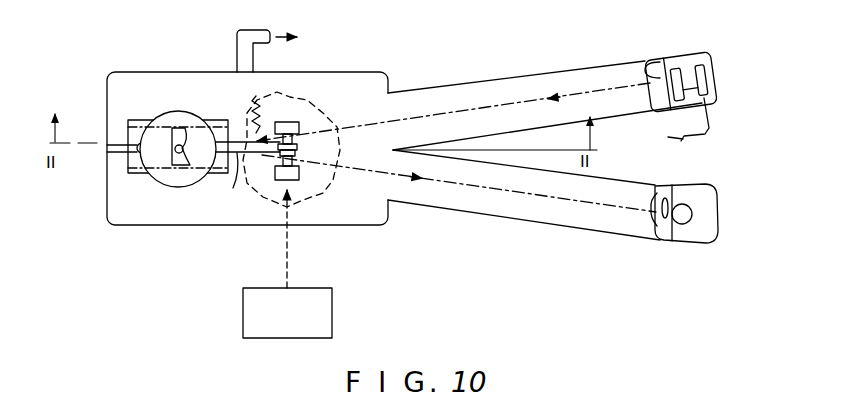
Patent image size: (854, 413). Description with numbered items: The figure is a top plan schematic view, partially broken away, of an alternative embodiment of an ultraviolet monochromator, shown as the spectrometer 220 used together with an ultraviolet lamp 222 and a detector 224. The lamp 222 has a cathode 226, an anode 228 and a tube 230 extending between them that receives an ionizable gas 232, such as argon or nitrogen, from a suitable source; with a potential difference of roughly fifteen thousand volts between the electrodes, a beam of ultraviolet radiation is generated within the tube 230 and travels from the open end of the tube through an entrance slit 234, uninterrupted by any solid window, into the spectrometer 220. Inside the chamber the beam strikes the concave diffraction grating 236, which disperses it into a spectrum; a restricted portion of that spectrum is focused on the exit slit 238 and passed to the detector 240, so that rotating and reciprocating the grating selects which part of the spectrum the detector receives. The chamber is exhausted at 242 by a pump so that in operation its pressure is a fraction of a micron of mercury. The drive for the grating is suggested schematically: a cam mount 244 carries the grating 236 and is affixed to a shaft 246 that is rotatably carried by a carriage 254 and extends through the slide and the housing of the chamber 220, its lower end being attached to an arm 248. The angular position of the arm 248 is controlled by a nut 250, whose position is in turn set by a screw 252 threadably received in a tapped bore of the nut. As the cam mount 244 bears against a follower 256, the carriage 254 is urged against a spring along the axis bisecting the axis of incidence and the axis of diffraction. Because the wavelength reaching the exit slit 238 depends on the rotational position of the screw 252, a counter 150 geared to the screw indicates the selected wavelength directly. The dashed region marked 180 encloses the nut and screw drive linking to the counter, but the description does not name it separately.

The counter 150 is at (243, 309).
The counter drive mechanism 180 is at (291, 190).
The spectrometer 220 is at (198, 41).
The ultraviolet lamp 222 is at (727, 31).
The detector 224 is at (702, 187).
The cathode 226 is at (706, 73).
The anode 228 is at (679, 68).
The tube 230 is at (707, 56).
The ionizable gas 232 is at (657, 133).
The entrance slit 234 is at (648, 61).
The concave diffraction grating 236 is at (184, 146).
The exit slit 238 is at (662, 196).
The detector 240 is at (692, 216).
The exhaust 242 is at (277, 36).
The cam mount 244 is at (182, 126).
The shaft 246 is at (226, 140).
The arm 248 is at (217, 181).
The nut 250 is at (298, 153).
The screw 252 is at (336, 160).
The carriage 254 is at (130, 121).
The follower 256 is at (137, 146).